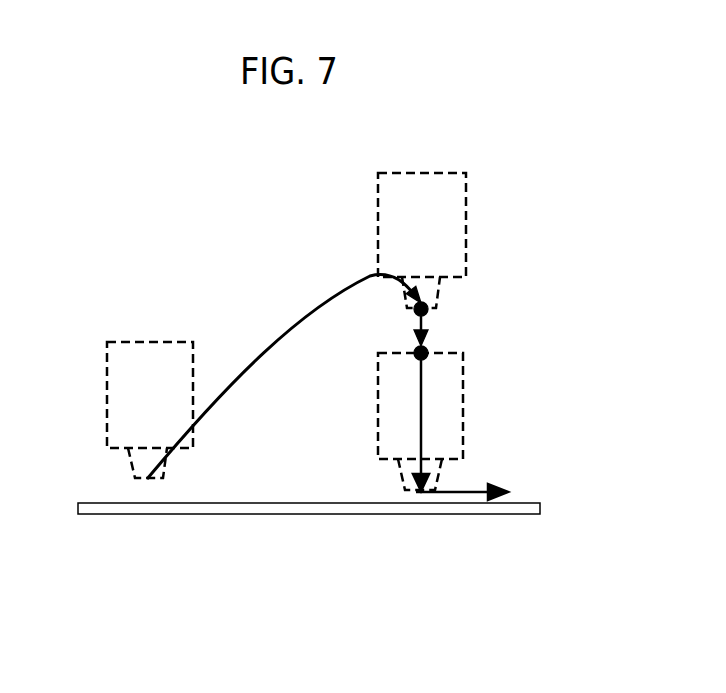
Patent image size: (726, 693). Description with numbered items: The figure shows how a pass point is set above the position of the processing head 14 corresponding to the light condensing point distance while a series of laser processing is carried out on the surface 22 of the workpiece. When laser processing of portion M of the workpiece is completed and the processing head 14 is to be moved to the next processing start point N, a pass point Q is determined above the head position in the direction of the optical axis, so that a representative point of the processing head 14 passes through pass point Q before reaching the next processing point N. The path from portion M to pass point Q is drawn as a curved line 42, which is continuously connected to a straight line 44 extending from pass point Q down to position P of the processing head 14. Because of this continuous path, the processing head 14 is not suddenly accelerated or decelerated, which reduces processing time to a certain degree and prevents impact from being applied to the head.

The processing head 14 is at (118, 314).
The curved line 42 is at (280, 337).
The straight line 44 is at (424, 320).
The pass point Q is at (432, 298).
The position of the processing head P is at (427, 357).
The surface 22 is at (527, 503).
The portion M is at (143, 536).
The next processing start point N is at (416, 536).